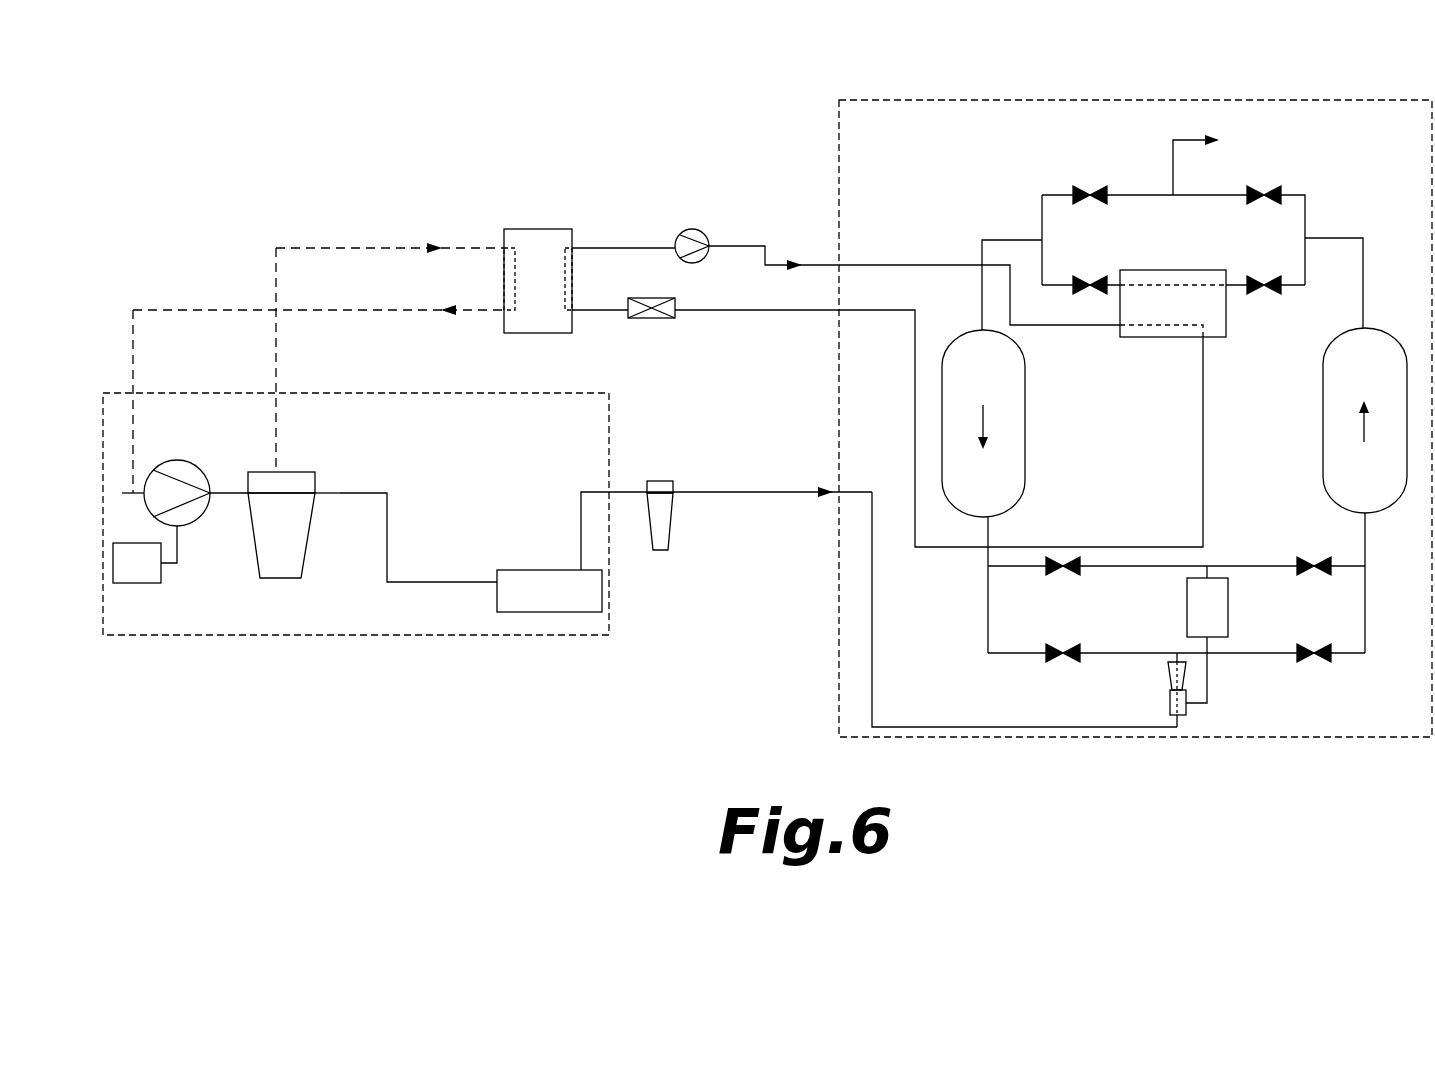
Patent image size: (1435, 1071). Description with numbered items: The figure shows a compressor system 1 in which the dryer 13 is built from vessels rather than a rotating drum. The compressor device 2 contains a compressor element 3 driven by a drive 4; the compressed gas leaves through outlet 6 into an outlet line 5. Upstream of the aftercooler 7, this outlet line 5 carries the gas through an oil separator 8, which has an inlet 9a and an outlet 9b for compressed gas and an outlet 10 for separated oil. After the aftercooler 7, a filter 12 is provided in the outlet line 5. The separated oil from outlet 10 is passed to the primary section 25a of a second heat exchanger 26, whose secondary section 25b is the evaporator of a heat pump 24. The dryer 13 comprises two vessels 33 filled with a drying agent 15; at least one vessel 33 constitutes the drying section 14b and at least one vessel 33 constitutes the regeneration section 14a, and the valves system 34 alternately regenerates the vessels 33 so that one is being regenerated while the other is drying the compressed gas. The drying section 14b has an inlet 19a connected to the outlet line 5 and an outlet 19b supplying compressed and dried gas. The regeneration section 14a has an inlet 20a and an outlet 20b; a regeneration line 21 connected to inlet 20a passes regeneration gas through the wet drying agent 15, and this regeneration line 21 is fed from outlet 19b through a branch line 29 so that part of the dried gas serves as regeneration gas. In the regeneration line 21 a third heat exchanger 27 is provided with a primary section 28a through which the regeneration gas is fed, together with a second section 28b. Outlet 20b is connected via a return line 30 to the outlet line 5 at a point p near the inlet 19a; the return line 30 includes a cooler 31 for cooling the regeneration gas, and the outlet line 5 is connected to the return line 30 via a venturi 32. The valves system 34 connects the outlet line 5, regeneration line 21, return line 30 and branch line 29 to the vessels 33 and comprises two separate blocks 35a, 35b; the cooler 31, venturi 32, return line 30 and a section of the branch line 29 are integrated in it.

The compressor system 1 is at (353, 110).
The compressor device 2 is at (389, 635).
The compressor element 3 is at (197, 527).
The drive 4 is at (137, 583).
The outlet line 5 is at (348, 493).
The outlet 6 is at (210, 490).
The aftercooler 7 is at (525, 570).
The oil separator 8 is at (275, 578).
The inlet 9a is at (247, 493).
The outlet 9b is at (313, 493).
The outlet for separated oil 10 is at (280, 472).
The filter 12 is at (660, 550).
The dryer 13 is at (955, 737).
The regeneration section 14a is at (1012, 415).
The drying section 14b is at (1345, 417).
The drying agent 15 is at (1171, 403).
The inlet 19a is at (1365, 513).
The outlet 19b is at (1365, 328).
The inlet 20a is at (975, 330).
The outlet 20b is at (990, 517).
The regeneration line 21 is at (1032, 240).
The heat pump 24 is at (660, 245).
The primary section 25a is at (504, 275).
The secondary section 25b is at (572, 270).
The second heat exchanger 26 is at (572, 333).
The third heat exchanger 27 is at (1226, 327).
The primary section 28a is at (1173, 283).
The second passage 28b is at (1160, 337).
The branch line 29 is at (1042, 255).
The return line 30 is at (1210, 637).
The cooler 31 is at (1228, 610).
The venturi 32 is at (1170, 695).
The vessel 33 is at (1025, 470).
The valves system 34 is at (1290, 160).
The block 35a is at (1235, 175).
The block 35b is at (1280, 565).
The point p is at (1170, 703).